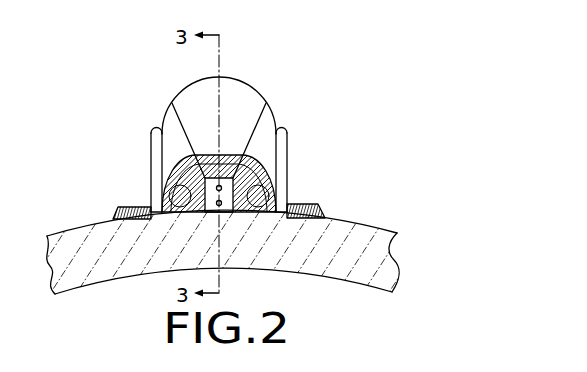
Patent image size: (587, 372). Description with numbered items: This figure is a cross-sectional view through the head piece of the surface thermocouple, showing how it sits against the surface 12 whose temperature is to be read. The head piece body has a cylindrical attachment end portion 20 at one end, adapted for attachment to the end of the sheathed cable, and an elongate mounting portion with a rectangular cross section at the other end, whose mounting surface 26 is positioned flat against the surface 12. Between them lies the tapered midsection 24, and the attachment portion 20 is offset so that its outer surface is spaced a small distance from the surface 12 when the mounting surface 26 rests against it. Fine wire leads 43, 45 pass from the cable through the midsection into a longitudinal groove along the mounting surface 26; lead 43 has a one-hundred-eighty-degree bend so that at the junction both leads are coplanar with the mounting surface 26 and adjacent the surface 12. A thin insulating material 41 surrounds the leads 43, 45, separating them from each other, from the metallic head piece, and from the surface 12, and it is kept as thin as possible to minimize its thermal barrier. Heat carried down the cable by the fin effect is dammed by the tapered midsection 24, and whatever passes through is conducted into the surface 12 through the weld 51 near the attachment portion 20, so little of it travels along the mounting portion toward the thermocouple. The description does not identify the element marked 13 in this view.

The surface 12 is at (234, 244).
The panel sheet 13 is at (400, 248).
The cylindrical attachment end portion 20 is at (183, 85).
The tapered midsection 24 is at (240, 111).
The mounting surface 26 is at (205, 213).
The insulating material 41 is at (193, 182).
The fine wire lead 43 is at (222, 188).
The fine wire lead 45 is at (205, 197).
The weld 51 is at (270, 150).